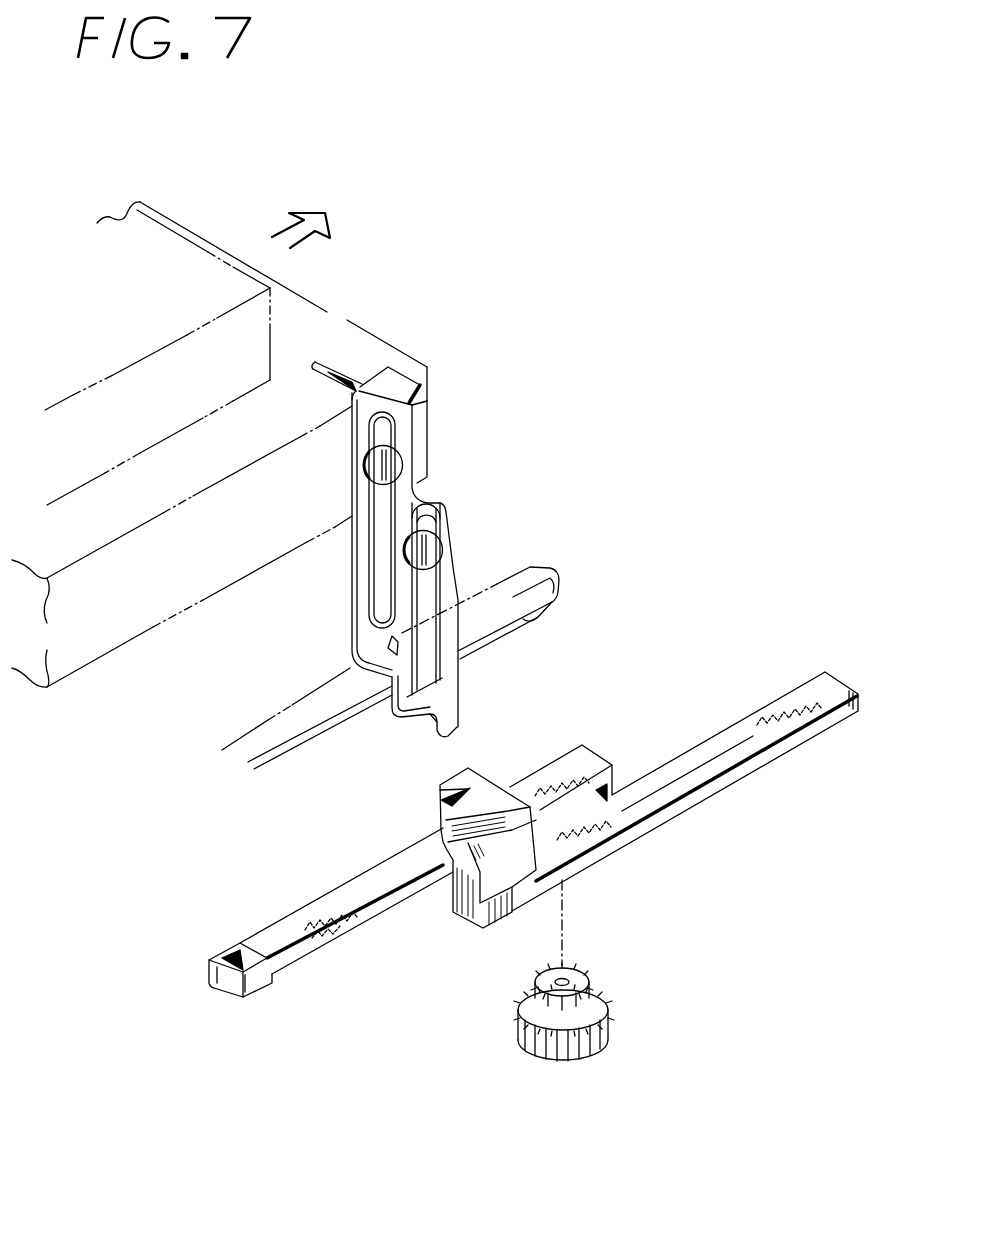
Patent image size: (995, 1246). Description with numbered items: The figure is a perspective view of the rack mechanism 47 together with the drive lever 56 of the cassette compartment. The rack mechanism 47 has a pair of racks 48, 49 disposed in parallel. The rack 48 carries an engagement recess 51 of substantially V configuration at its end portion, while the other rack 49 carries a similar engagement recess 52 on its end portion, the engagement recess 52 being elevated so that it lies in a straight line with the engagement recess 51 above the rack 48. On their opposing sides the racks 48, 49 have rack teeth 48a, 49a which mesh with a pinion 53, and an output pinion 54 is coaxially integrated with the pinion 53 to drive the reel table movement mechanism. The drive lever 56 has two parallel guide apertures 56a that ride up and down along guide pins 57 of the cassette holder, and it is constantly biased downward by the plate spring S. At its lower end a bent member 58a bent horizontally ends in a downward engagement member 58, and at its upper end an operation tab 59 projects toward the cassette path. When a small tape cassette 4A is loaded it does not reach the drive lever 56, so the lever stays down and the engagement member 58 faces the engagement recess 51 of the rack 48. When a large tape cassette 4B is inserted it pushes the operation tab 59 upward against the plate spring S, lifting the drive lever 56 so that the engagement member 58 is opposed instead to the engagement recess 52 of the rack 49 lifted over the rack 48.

The small tape cassette 4A is at (147, 353).
The large tape cassette 4B is at (335, 308).
The plate spring S is at (558, 565).
The rack mechanism 47 is at (667, 843).
The rack 48 is at (346, 907).
The rack teeth 48a is at (352, 923).
The rack 49 is at (684, 788).
The rack teeth 49a is at (757, 723).
The engagement recess 51 is at (227, 977).
The engagement recess 52 is at (452, 800).
The pinion 53 is at (567, 970).
The output pinion 54 is at (610, 1018).
The drive lever 56 is at (427, 537).
The guide apertures 56a is at (390, 433).
The guide pins 57 is at (390, 463).
The engagement member 58 is at (455, 725).
The bent member 58a is at (448, 693).
The operation tab 59 is at (394, 382).